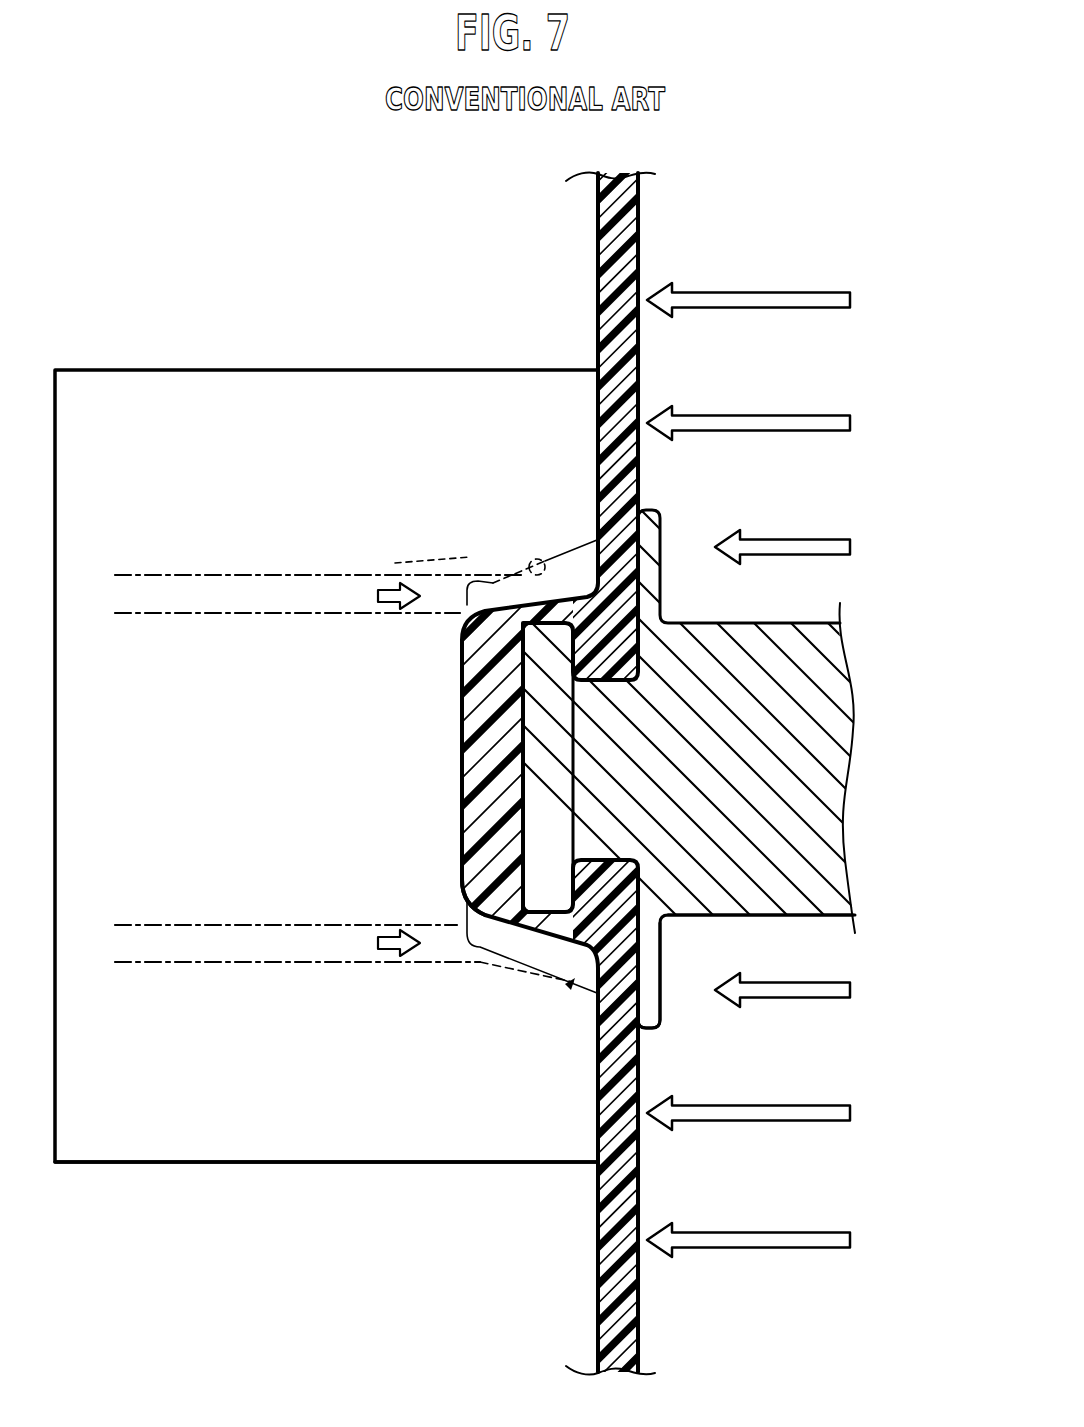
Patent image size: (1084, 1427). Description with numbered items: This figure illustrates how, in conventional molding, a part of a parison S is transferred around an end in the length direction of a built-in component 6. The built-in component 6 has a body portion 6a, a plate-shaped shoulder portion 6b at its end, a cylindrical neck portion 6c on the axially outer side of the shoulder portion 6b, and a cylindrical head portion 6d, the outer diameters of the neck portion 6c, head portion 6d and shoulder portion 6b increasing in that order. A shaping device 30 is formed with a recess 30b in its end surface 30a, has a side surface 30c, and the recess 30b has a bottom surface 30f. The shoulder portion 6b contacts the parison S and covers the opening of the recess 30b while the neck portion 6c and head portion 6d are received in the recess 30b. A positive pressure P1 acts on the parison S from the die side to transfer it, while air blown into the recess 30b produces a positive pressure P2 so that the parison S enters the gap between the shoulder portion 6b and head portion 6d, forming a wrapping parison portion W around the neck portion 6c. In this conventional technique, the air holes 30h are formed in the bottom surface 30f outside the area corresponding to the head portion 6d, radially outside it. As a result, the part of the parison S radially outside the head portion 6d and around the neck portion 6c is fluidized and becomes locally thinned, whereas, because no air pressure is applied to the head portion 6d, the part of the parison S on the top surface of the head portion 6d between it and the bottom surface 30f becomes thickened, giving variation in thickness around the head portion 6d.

The parison S is at (640, 231).
The built-in component 6 is at (798, 605).
The body portion 6a is at (808, 917).
The shoulder portion 6b is at (645, 1028).
The neck portion 6c is at (617, 830).
The head portion 6d is at (537, 887).
The shaping device 30 is at (195, 368).
The end surface 30a is at (603, 1100).
The recess 30b is at (550, 548).
The side surface 30c is at (195, 1165).
The bottom surface 30f is at (395, 563).
The air holes 30h is at (250, 575).
The positive pressure P1 is at (780, 308).
The positive pressure P2 is at (378, 772).
The wrapping parison portion W is at (572, 982).